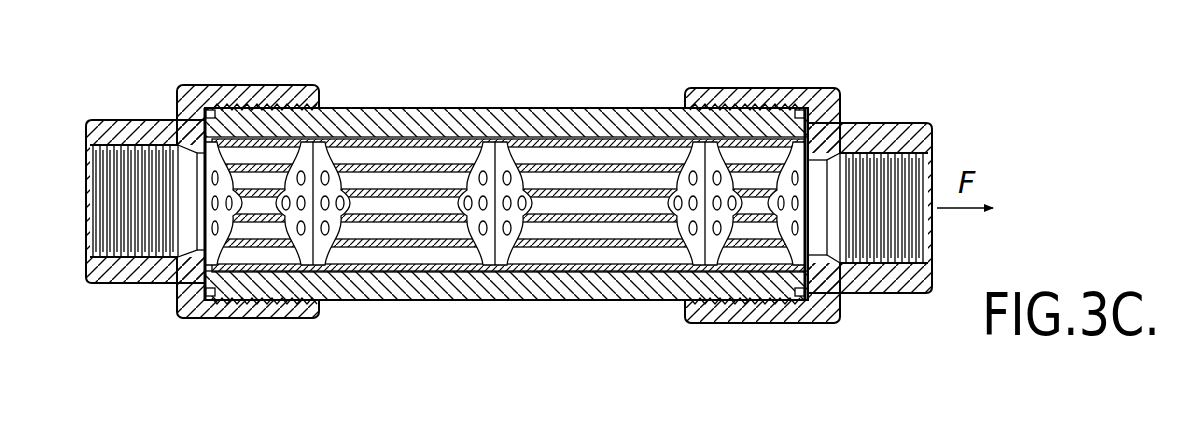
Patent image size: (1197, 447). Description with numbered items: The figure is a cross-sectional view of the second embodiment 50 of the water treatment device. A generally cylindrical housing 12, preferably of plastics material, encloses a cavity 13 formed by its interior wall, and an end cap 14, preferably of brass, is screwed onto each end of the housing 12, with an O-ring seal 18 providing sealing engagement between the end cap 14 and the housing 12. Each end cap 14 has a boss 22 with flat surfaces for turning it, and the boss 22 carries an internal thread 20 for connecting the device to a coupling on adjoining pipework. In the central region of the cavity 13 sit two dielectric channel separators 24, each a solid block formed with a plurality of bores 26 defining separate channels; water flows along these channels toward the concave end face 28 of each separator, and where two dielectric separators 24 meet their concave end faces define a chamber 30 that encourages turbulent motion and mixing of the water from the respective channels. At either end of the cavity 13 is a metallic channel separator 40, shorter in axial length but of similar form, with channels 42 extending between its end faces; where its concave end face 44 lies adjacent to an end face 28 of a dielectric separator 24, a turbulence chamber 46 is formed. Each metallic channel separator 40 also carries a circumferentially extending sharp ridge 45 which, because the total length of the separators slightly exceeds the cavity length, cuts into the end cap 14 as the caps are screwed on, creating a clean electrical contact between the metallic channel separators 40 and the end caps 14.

The housing 12 is at (527, 108).
The cavity 13 is at (824, 223).
The end cap 14 is at (205, 85).
The O-ring seal 18 is at (838, 120).
The internal thread 20 is at (90, 243).
The boss 22 is at (120, 120).
The dielectric channel separator 24 is at (410, 245).
The bores 26 is at (455, 268).
The end face 28 is at (335, 160).
The chamber 30 is at (470, 295).
The metallic channel separator 40 is at (207, 286).
The channels 42 is at (278, 252).
The end face 44 is at (322, 148).
The sharp ridge 45 is at (175, 297).
The turbulence chamber 46 is at (335, 300).
The second embodiment 50 is at (427, 100).